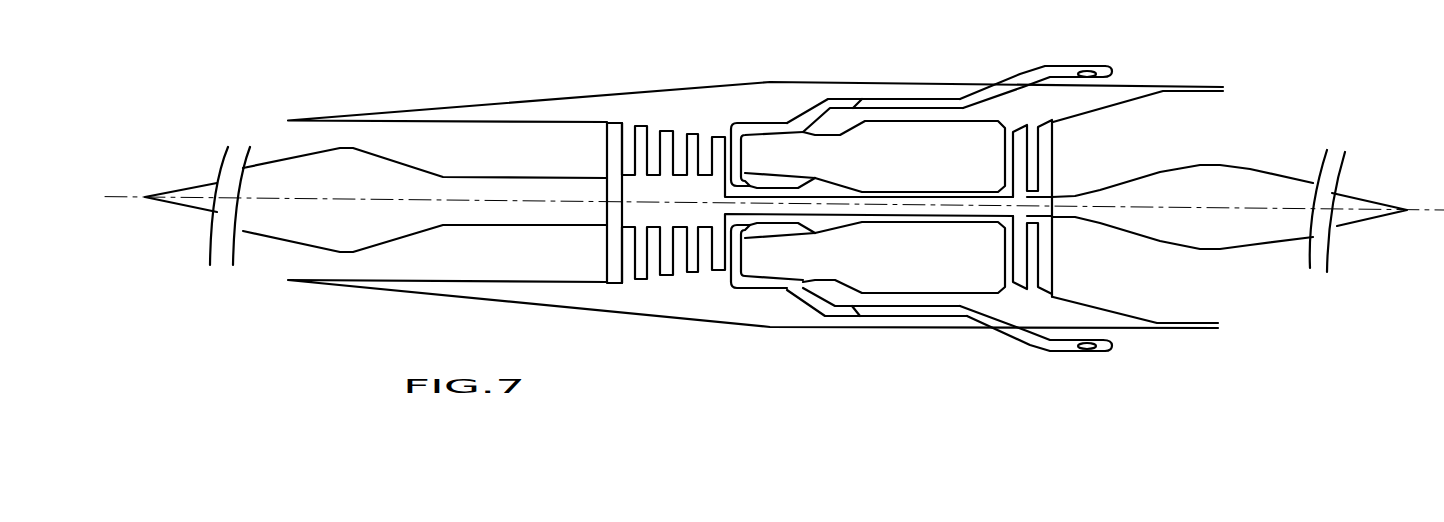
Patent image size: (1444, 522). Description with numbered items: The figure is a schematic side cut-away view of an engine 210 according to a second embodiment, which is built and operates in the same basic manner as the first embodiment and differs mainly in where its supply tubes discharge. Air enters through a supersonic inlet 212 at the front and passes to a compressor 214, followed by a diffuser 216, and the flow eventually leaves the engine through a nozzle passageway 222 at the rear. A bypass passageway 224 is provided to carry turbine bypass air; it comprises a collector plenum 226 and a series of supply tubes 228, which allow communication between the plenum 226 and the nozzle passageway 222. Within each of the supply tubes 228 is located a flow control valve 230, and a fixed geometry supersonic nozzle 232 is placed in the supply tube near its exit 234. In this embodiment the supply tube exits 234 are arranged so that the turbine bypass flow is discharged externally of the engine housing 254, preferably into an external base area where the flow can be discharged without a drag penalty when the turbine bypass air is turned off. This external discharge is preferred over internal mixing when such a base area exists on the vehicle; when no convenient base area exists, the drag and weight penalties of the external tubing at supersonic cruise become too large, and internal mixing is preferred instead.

The engine 210 is at (448, 80).
The supersonic inlet 212 is at (271, 126).
The engine housing 254 is at (617, 102).
The compressor 214 is at (674, 110).
The diffuser 216 is at (770, 143).
The collector plenum 226 is at (778, 104).
The supply tubes 228 is at (840, 100).
The flow control valve 230 is at (877, 86).
The bypass passageway 224 is at (960, 81).
The fixed geometry supersonic nozzle 232 is at (1086, 66).
The supply tube exit 234 is at (1110, 69).
The nozzle passageway 222 is at (1151, 144).